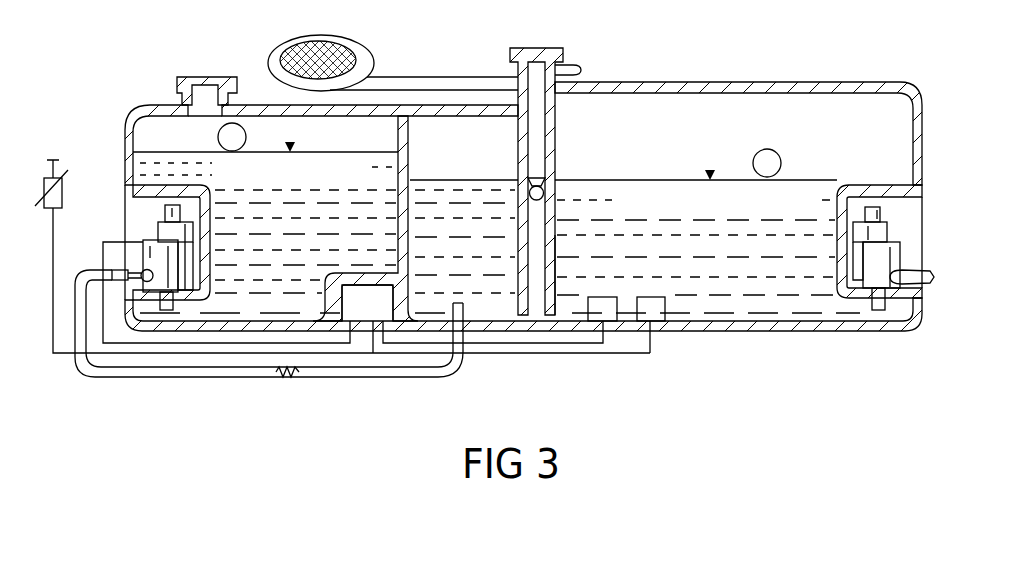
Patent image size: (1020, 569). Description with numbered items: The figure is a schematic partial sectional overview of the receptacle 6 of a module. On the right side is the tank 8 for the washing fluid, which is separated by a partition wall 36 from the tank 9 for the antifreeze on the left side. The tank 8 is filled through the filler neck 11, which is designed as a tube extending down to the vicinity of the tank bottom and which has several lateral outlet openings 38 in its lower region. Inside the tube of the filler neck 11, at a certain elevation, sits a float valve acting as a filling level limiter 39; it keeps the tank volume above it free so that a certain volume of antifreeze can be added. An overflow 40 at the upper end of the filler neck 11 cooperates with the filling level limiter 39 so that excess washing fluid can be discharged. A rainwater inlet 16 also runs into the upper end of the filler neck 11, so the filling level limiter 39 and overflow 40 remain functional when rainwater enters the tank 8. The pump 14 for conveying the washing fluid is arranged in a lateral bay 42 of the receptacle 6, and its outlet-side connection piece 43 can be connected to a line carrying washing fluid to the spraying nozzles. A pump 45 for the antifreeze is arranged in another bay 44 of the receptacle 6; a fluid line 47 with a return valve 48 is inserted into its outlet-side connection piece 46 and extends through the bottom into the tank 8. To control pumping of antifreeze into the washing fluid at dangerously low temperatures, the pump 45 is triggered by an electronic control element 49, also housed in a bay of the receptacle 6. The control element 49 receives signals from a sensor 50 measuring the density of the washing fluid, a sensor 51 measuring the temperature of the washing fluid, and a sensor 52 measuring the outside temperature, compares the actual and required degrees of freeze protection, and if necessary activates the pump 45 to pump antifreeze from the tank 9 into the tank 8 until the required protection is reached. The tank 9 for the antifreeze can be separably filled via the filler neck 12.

The receptacle 6 is at (742, 82).
The tank for the washing fluid 8 is at (791, 132).
The tank for the antifreeze 9 is at (356, 142).
The filler neck 11 is at (538, 132).
The filler neck 12 is at (203, 90).
The pump 14 is at (875, 272).
The rainwater inlet 16 is at (413, 77).
The partition wall 36 is at (407, 178).
The lateral outlet openings 38 is at (553, 235).
The filling level limiter 39 is at (553, 180).
The overflow 40 is at (580, 70).
The lateral bay 42 is at (895, 203).
The connection piece 43 is at (932, 284).
The bay 44 is at (138, 202).
The pump 45 is at (157, 230).
The connection piece 46 is at (133, 271).
The fluid line 47 is at (185, 378).
The return valve 48 is at (279, 377).
The electronic control element 49 is at (365, 308).
The sensor 50 is at (612, 318).
The sensor 51 is at (660, 308).
The sensor 52 is at (60, 177).